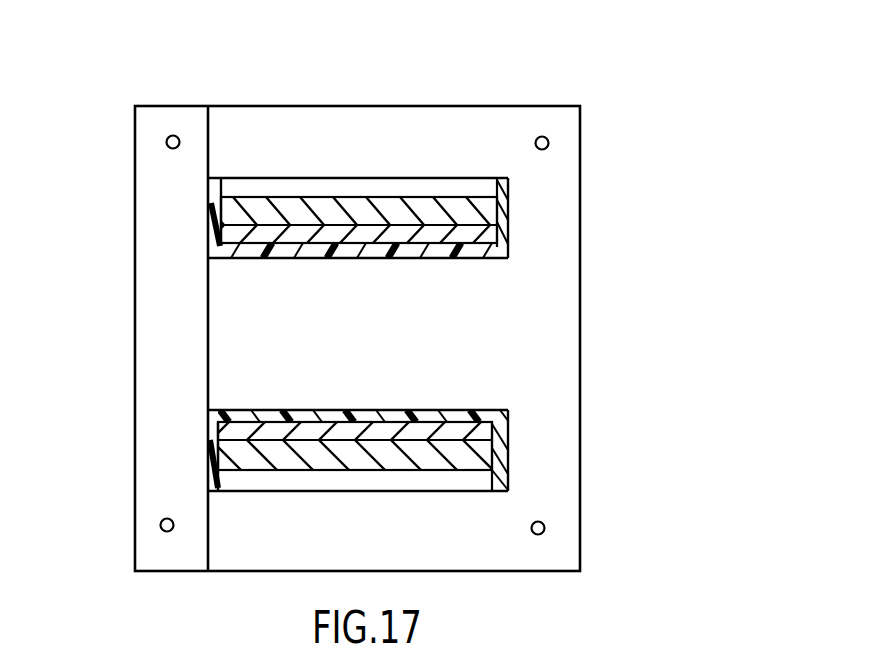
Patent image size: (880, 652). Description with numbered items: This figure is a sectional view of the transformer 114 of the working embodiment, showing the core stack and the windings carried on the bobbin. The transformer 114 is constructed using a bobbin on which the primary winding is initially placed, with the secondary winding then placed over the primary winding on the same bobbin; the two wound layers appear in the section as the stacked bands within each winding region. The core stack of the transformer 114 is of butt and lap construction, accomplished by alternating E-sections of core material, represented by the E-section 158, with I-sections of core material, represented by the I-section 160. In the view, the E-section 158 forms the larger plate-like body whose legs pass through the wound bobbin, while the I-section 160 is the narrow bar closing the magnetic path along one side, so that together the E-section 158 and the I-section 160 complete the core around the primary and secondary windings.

The transformer 114 is at (652, 112).
The E-section 158 is at (562, 198).
The I-section 160 is at (153, 213).